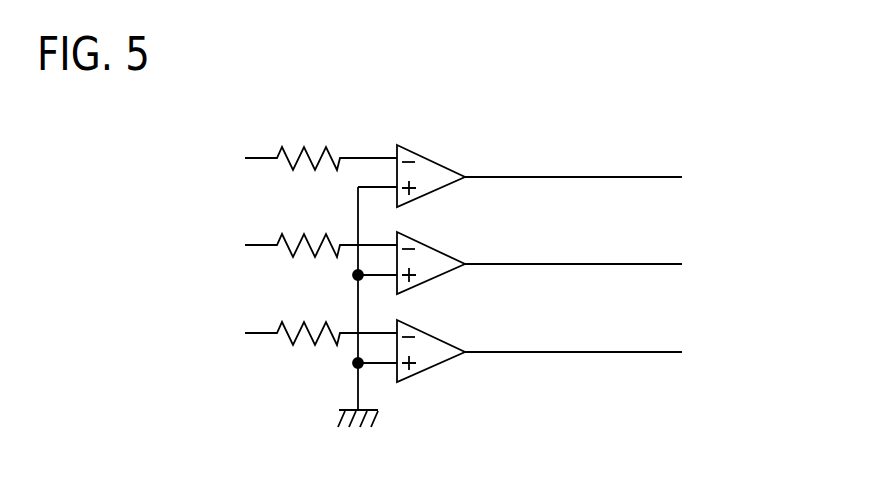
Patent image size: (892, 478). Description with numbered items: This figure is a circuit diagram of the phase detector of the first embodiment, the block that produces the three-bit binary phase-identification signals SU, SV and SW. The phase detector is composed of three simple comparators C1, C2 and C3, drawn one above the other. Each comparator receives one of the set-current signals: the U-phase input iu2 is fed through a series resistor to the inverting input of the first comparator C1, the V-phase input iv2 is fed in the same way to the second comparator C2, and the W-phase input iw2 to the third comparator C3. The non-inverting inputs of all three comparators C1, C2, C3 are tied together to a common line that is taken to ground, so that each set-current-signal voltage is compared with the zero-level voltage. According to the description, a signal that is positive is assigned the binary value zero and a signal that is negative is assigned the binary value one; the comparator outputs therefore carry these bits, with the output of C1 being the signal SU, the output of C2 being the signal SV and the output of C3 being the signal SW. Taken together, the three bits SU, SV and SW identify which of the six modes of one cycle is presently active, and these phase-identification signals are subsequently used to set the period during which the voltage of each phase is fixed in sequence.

The comparator C1 is at (432, 178).
The comparator C2 is at (432, 266).
The comparator C3 is at (432, 354).
The U-phase current signal input iu2 is at (296, 161).
The V-phase current signal input iv2 is at (296, 248).
The W-phase current signal input iw2 is at (295, 336).
The three-bit-phase-identification-signal SU is at (594, 180).
The three-bit-phase-identification-signal SV is at (595, 267).
The three-bit-phase-identification-signal SW is at (597, 354).